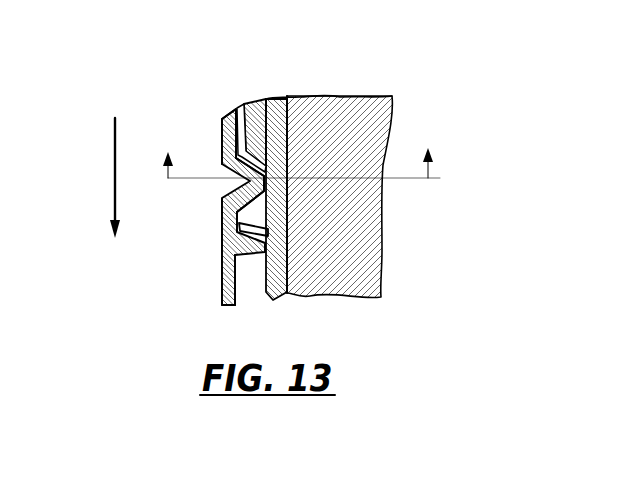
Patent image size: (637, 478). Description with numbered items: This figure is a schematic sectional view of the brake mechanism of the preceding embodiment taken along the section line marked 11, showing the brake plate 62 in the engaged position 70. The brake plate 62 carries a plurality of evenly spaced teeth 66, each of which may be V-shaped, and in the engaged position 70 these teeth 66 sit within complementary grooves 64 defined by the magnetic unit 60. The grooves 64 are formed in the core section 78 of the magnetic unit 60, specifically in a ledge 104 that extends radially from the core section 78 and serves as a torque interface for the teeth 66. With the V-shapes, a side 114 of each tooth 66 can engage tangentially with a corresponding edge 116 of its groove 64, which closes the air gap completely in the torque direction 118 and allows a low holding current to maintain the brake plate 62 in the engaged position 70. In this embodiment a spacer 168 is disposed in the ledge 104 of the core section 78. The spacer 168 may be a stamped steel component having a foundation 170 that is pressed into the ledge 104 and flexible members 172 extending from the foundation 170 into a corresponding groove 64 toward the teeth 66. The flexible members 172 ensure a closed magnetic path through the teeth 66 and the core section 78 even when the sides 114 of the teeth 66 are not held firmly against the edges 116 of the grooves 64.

The magnetic unit 60 is at (335, 114).
The brake plate 62 is at (224, 126).
The grooves 64 is at (240, 249).
The teeth 66 is at (257, 252).
The engaged position 70 is at (236, 97).
The core section 78 is at (367, 117).
The ledge 104 is at (372, 255).
The side 114 is at (260, 205).
The edge 116 is at (240, 181).
The torque direction 118 is at (114, 176).
The spacer 168 is at (287, 96).
The foundation 170 is at (287, 127).
The flexible members 172 is at (241, 105).
The section line 11- 11 is at (297, 176).